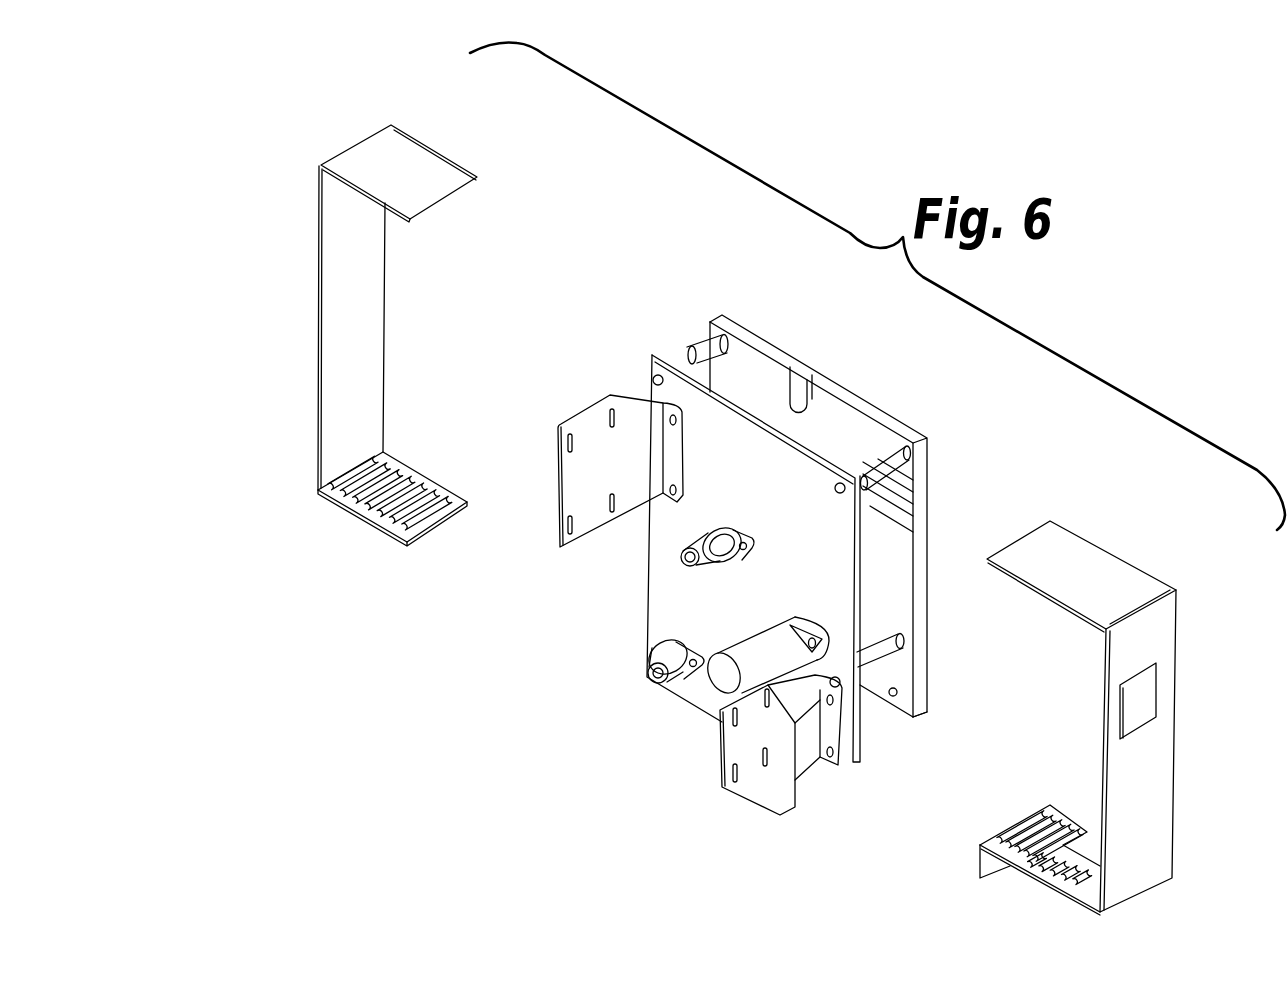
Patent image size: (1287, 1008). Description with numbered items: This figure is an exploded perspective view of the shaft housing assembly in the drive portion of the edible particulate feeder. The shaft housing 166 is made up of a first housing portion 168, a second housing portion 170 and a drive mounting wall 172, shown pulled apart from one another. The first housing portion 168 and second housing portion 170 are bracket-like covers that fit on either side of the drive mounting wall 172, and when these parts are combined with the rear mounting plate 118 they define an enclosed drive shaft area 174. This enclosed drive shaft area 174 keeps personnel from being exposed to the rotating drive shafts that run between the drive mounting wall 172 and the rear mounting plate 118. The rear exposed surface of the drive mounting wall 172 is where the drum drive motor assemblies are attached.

The rear mounting plate 118 is at (858, 390).
The shaft housing 166 is at (430, 167).
The first housing portion 168 is at (317, 316).
The second housing portion 170 is at (1176, 745).
The drive mounting wall 172 is at (830, 570).
The enclosed drive shaft area 174 is at (887, 532).